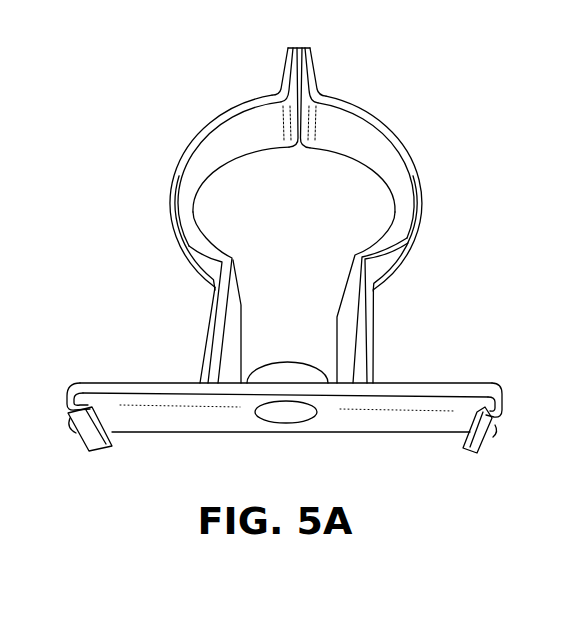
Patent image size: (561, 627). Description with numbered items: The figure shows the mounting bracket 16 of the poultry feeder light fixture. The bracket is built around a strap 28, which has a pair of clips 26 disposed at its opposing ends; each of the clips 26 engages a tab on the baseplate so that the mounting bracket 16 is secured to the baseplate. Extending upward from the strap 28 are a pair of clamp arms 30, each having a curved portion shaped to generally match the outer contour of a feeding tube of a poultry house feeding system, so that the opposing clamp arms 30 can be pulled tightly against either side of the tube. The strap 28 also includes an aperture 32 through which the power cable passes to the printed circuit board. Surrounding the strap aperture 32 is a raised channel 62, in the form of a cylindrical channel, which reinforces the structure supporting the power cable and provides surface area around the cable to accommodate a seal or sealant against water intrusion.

The mounting bracket 16 is at (398, 80).
The clamp arms 30 is at (178, 190).
The strap 28 is at (395, 390).
The clips 26 is at (72, 388).
The raised channel 62 is at (290, 373).
The aperture 32 is at (283, 418).